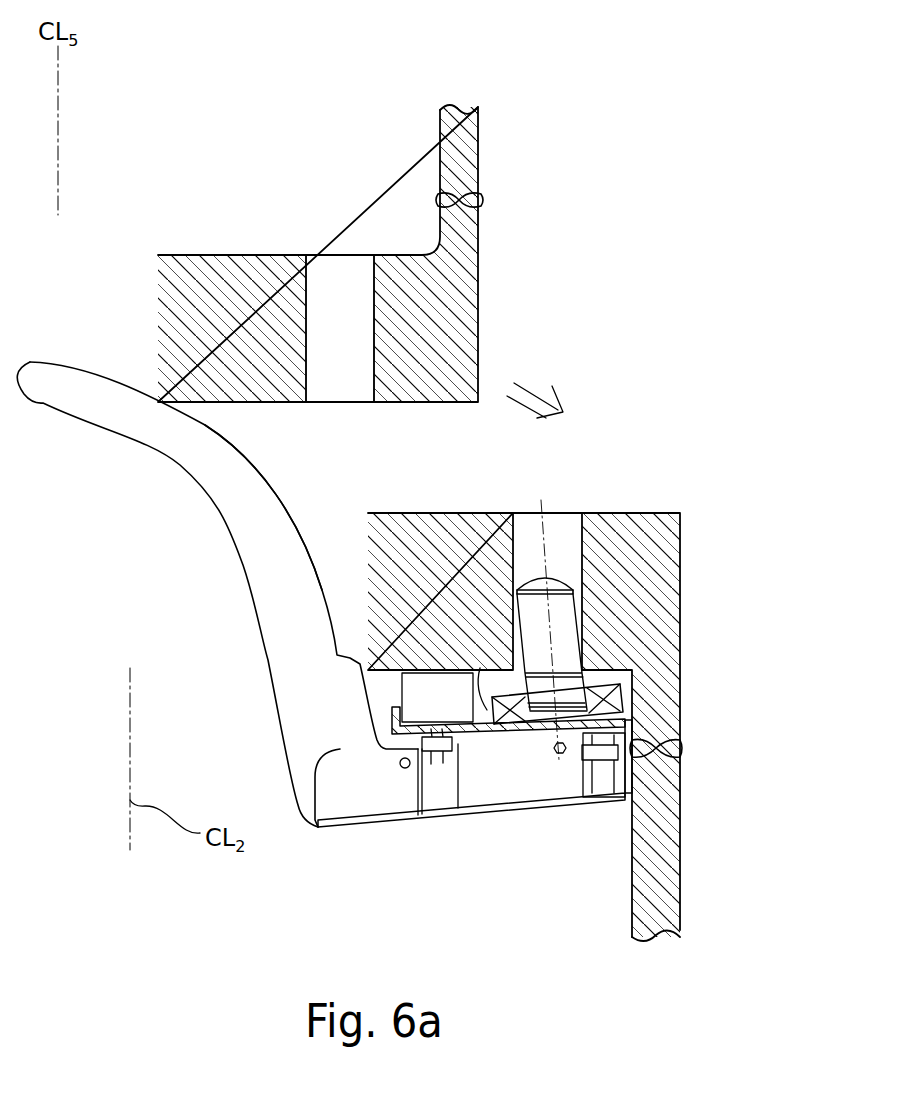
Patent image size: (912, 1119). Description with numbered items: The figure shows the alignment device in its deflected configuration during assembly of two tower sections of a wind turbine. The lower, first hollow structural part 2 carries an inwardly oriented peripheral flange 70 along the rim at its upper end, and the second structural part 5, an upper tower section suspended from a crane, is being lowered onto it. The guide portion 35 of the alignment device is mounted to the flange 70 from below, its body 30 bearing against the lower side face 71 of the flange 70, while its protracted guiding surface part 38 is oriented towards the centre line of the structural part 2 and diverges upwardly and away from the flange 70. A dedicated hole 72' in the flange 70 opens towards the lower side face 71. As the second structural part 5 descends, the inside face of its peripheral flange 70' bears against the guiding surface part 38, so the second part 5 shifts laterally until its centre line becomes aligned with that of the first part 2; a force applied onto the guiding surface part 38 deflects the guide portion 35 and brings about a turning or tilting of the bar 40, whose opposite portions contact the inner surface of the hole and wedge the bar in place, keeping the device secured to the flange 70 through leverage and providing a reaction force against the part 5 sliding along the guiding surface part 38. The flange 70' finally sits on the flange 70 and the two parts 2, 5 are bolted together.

The first hollow structural part 2 is at (688, 825).
The second structural part 5 is at (462, 147).
The body 30 is at (573, 780).
The guide portion 35 is at (202, 456).
The guiding surface part 38 is at (270, 478).
The bar 40 is at (547, 578).
The peripheral flange 70 is at (524, 692).
The peripheral flange of the second structural part 70' is at (371, 254).
The lower side face 71 is at (490, 742).
The hole 72' is at (340, 293).